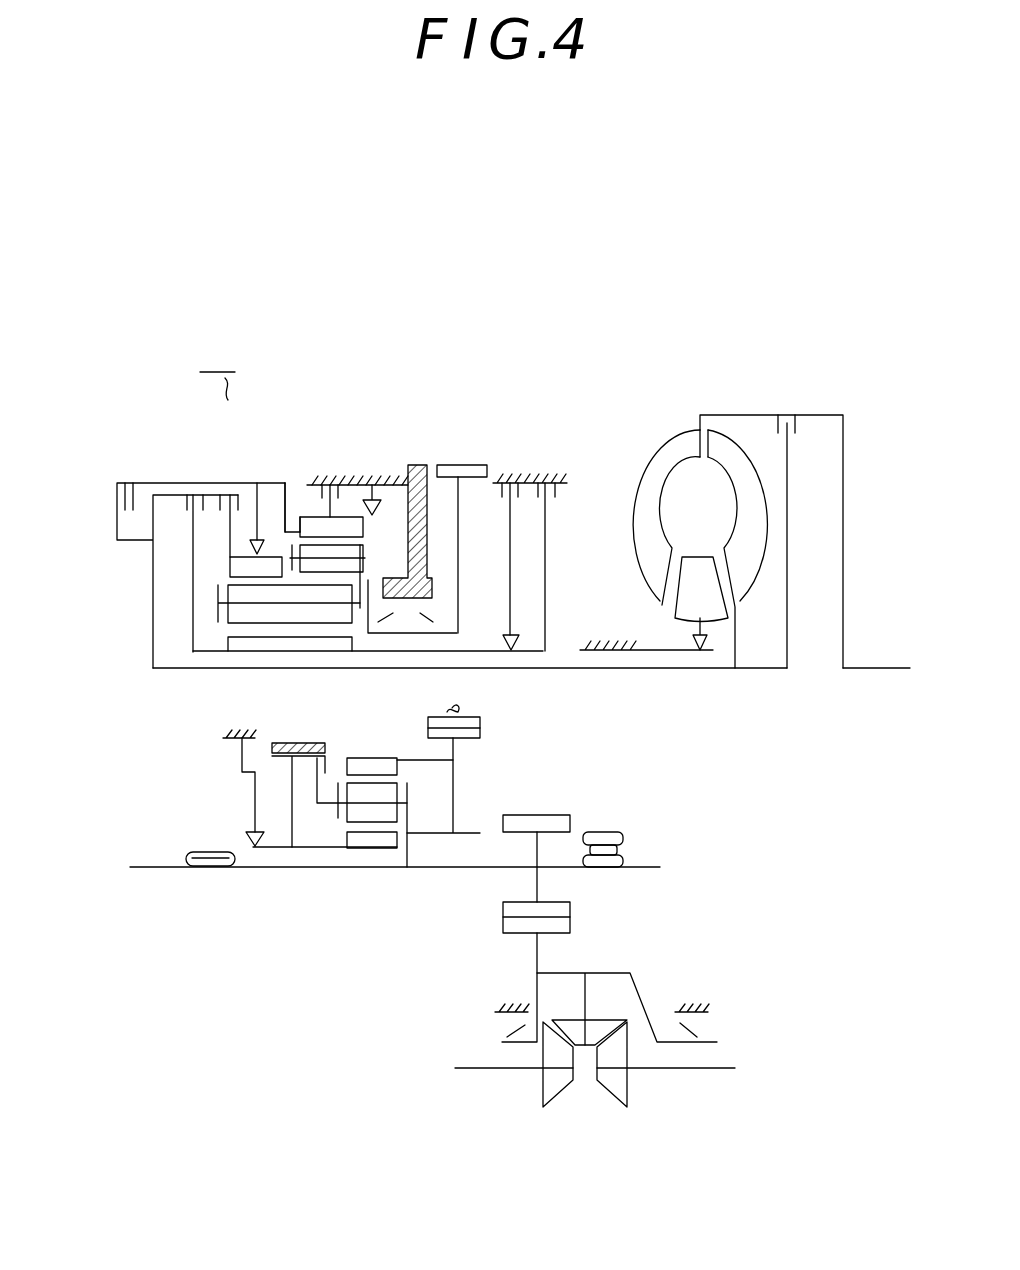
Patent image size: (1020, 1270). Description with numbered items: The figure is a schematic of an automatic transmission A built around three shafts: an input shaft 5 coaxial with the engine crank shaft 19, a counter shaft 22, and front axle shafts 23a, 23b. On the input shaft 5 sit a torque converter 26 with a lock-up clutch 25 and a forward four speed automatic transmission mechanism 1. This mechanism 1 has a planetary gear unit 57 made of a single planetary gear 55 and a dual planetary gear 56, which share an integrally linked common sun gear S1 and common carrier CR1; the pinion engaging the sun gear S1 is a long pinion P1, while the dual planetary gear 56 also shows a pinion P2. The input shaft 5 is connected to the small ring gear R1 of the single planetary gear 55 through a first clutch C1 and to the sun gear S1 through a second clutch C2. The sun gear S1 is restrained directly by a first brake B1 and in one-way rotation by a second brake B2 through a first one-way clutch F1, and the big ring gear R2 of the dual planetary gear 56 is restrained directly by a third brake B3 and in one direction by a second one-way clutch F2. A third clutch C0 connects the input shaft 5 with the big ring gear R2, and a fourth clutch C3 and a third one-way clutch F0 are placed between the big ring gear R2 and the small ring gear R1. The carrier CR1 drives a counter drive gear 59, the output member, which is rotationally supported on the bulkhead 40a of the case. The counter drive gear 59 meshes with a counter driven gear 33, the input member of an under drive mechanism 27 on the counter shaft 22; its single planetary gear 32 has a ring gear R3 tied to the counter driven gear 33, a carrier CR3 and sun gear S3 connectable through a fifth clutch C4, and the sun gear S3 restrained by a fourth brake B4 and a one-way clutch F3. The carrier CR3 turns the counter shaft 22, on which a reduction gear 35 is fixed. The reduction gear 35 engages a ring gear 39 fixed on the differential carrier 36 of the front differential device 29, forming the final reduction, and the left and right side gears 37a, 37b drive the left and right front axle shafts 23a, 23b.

The forward four speed automatic transmission mechanism 1 is at (175, 412).
The automatic transmission A is at (217, 368).
The planetary gear unit 57 is at (350, 362).
The single planetary gear 55 is at (270, 518).
The dual planetary gear 56 is at (302, 500).
The case bulkhead 40a is at (420, 465).
The counter drive gear 59 is at (458, 465).
The torque converter 26 is at (678, 422).
The lock-up clutch 25 is at (798, 415).
The engine crank shaft 19 is at (872, 666).
The input shaft 5 is at (603, 670).
The third clutch C0 is at (122, 483).
The first (forward) clutch C1 is at (227, 495).
The second (reverse) clutch C2 is at (190, 494).
The fourth clutch C3 is at (257, 483).
The fifth (direct) clutch C4 is at (352, 804).
The first brake B1 is at (540, 483).
The second brake B2 is at (503, 483).
The third brake B3 is at (313, 484).
The fourth (under drive) brake B4 is at (303, 779).
The third one-way clutch F0 is at (250, 548).
The first one-way clutch F1 is at (502, 642).
The second one-way clutch F2 is at (380, 485).
The one-way clutch F3 is at (250, 846).
The ring gear (small ring gear) R1 is at (238, 571).
The long pinion P1 is at (238, 615).
The sun gear S1 is at (288, 640).
The carrier CR1 is at (360, 613).
The ring gear (big ring gear) R2 is at (345, 530).
The pinion P2 is at (348, 566).
The ring gear R3 is at (385, 770).
The sun gear S3 is at (363, 840).
The carrier CR3 is at (405, 812).
The under drive mechanism 27 is at (235, 791).
The single planetary gear 32 is at (378, 750).
The counter driven gear 33 is at (473, 733).
The reduction gear 35 is at (543, 818).
The counter shaft 22 is at (262, 868).
The ring gear 39 is at (515, 927).
The differential carrier 36 is at (602, 973).
The front differential device 29 is at (593, 1095).
The left side gear 37a is at (557, 1102).
The right side gear 37b is at (620, 1105).
The left front axle shaft 23a is at (498, 1068).
The right front axle shaft 23b is at (712, 1068).